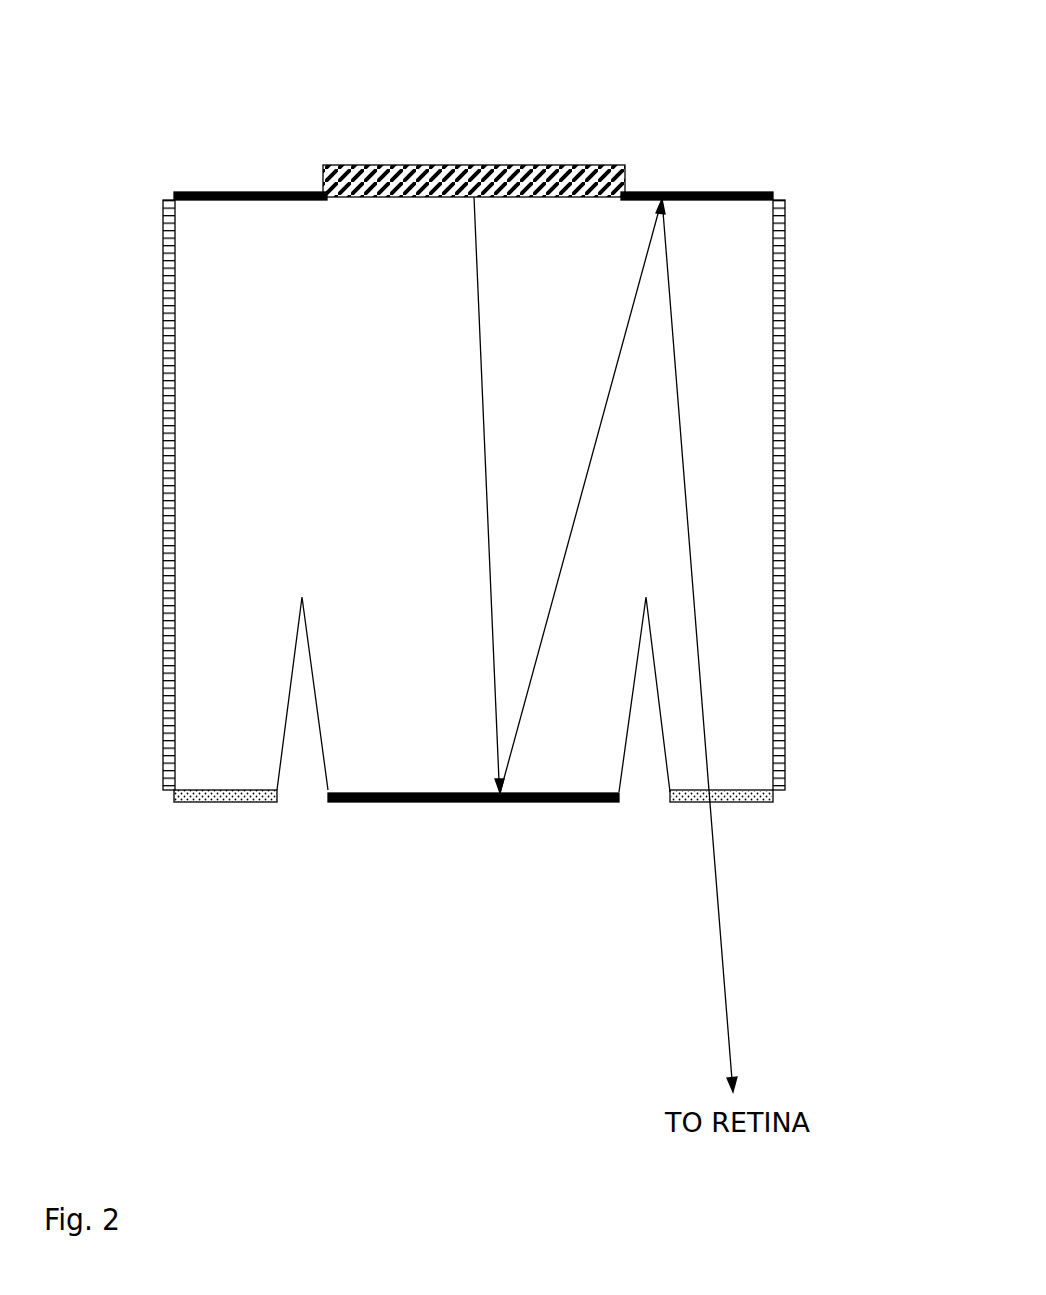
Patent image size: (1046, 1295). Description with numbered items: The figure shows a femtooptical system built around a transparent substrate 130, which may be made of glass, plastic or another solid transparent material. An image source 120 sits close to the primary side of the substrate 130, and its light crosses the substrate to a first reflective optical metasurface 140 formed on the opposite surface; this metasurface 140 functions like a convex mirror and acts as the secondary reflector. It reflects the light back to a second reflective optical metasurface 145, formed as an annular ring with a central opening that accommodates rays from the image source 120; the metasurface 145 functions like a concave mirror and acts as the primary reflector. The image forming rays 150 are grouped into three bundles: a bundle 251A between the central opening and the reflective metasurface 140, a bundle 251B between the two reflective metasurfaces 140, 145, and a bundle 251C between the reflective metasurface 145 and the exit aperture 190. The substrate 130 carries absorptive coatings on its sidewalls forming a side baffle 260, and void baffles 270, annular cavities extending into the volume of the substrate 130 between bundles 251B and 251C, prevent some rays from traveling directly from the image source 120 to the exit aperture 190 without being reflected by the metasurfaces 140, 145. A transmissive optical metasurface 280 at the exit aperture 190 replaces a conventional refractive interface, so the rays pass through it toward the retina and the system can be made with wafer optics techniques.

The image source 120 is at (447, 165).
The second reflective optical metasurface 145 is at (725, 192).
The side baffle 260 is at (163, 360).
The transparent substrate 130 is at (385, 447).
The first reflective optical metasurface 140 is at (409, 792).
The void baffle 270 is at (305, 763).
The exit aperture 190 is at (727, 790).
The transmissive optical metasurface 280 is at (740, 800).
The image forming rays 150 is at (585, 644).
The bundle of rays between the central opening and reflective surface 251A is at (463, 495).
The bundle of rays between the two reflective surfaces 251B is at (582, 496).
The bundle of rays between the reflective surface and the exit surface 251C is at (705, 645).